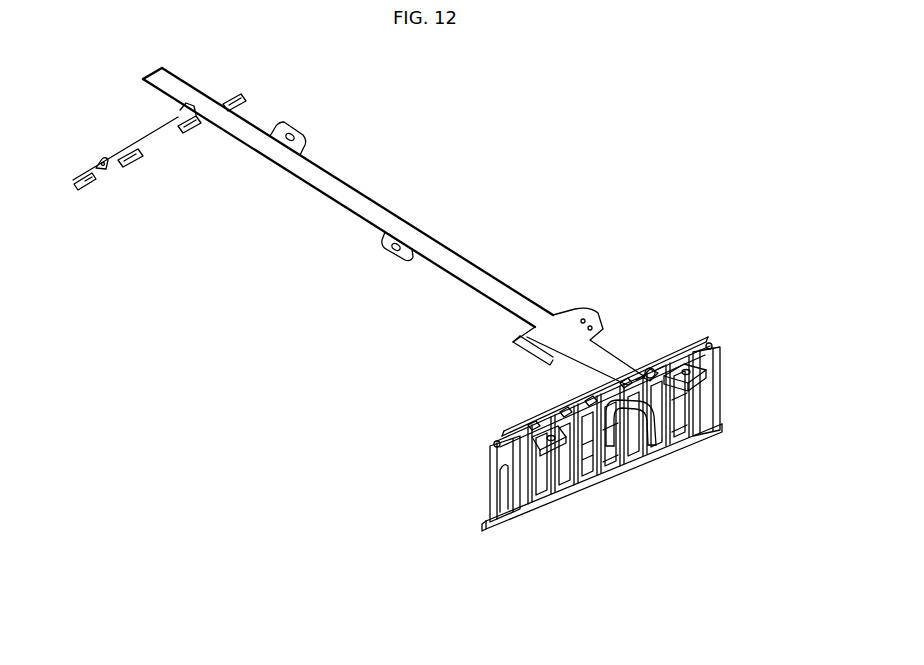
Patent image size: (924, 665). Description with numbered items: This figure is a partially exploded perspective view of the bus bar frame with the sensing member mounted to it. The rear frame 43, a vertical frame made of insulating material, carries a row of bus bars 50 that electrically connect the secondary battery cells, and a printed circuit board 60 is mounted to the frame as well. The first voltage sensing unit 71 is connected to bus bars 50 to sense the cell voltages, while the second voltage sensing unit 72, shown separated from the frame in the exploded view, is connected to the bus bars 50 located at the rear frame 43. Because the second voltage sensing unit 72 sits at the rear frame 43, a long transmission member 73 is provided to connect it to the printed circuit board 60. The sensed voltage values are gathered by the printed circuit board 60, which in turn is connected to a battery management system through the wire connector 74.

The rear frame 43 is at (724, 361).
The bus bar 50 is at (614, 466).
The printed circuit board 60 is at (645, 450).
The first voltage sensing unit 71 is at (568, 421).
The second voltage sensing unit 72 is at (126, 147).
The transmission member 73 is at (384, 210).
The wire connector 74 is at (644, 368).